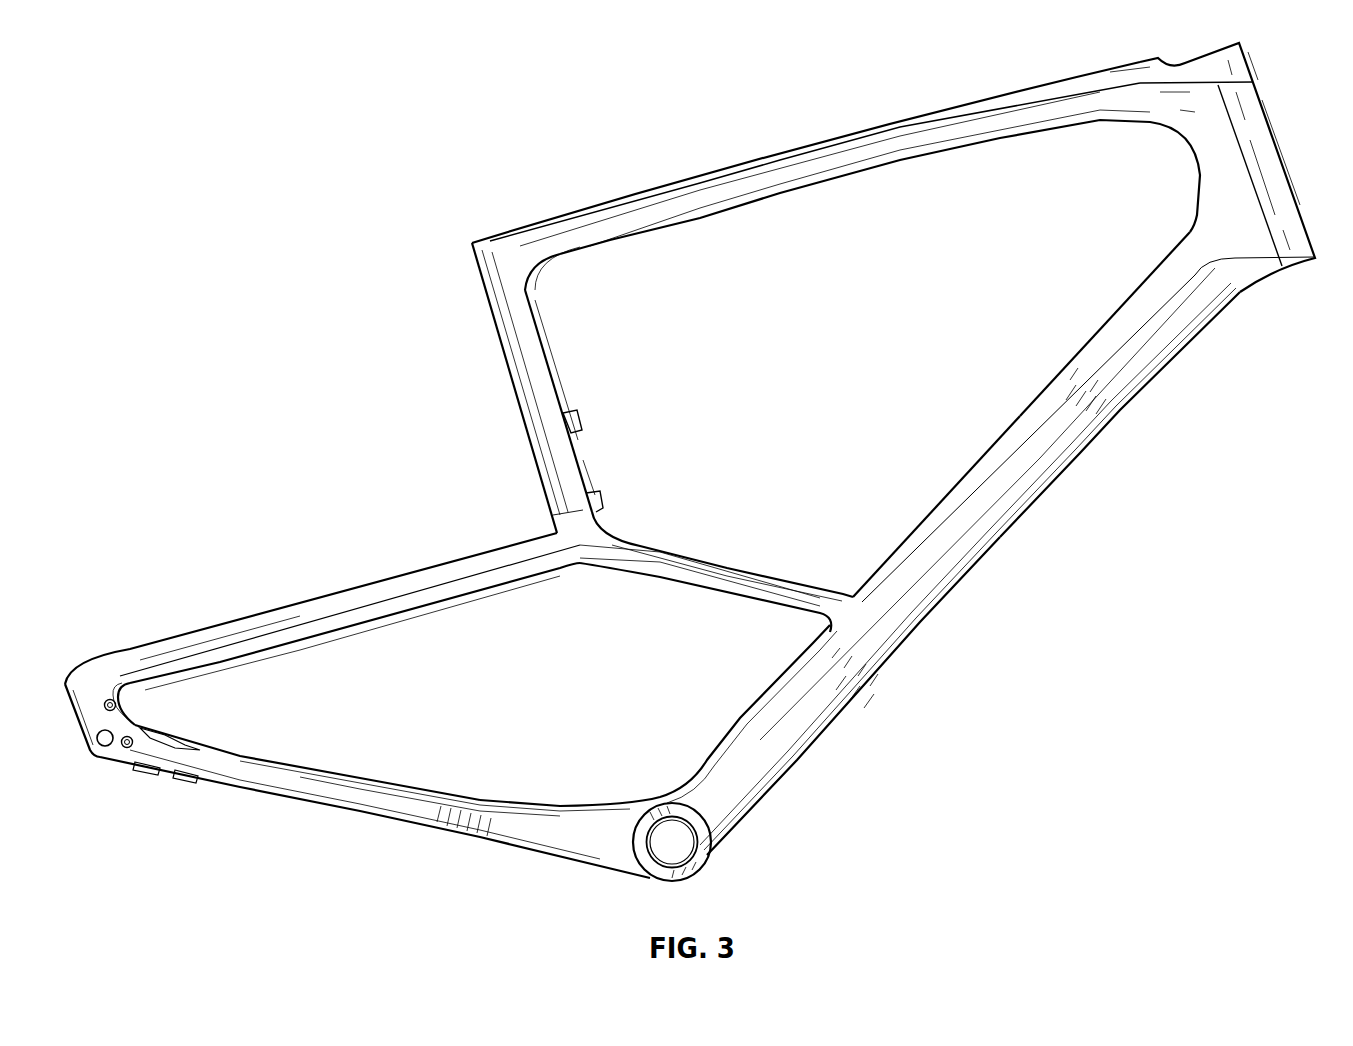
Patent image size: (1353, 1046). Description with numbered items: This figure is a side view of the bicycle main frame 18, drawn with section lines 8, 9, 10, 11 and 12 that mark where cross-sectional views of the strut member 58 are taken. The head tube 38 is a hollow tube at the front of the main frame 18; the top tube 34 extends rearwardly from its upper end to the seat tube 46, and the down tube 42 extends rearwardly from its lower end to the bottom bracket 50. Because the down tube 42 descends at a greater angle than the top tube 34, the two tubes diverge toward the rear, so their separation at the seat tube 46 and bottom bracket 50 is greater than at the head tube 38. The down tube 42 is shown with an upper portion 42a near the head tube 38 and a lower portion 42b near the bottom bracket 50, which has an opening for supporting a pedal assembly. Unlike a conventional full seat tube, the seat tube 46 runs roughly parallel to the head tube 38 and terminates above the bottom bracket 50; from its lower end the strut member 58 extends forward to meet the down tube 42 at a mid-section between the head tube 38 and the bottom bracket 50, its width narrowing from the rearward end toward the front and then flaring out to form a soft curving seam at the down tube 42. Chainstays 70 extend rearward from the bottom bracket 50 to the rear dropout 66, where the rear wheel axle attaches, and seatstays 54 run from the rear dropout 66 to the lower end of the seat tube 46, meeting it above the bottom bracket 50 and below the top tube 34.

The main frame 18 is at (229, 213).
The top tube 34 is at (757, 158).
The head tube 38 is at (1267, 153).
The down tube 42 is at (1005, 506).
The upper down tube portion 42a is at (1146, 355).
The lower down tube portion 42b is at (795, 725).
The seat tube 46 is at (553, 370).
The bottom bracket 50 is at (700, 848).
The seatstays 54 is at (285, 610).
The strut member 58 is at (727, 568).
The rear dropout 66 is at (85, 745).
The chainstays 70 is at (348, 811).
The section line 8- 8 is at (576, 610).
The section line 9- 9 is at (800, 557).
The section line 10- 10 is at (737, 623).
The section line 11- 11 is at (682, 607).
The section line 12- 12 is at (630, 598).